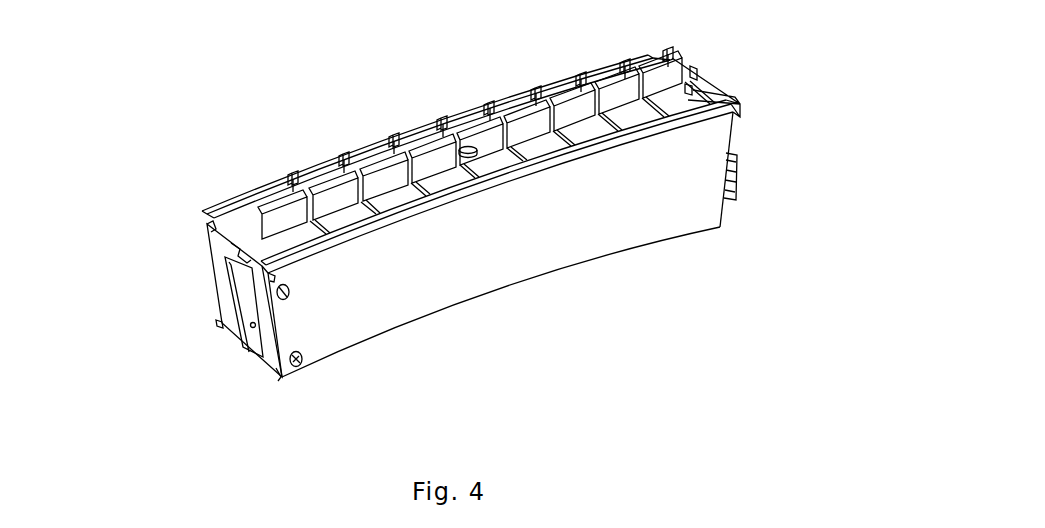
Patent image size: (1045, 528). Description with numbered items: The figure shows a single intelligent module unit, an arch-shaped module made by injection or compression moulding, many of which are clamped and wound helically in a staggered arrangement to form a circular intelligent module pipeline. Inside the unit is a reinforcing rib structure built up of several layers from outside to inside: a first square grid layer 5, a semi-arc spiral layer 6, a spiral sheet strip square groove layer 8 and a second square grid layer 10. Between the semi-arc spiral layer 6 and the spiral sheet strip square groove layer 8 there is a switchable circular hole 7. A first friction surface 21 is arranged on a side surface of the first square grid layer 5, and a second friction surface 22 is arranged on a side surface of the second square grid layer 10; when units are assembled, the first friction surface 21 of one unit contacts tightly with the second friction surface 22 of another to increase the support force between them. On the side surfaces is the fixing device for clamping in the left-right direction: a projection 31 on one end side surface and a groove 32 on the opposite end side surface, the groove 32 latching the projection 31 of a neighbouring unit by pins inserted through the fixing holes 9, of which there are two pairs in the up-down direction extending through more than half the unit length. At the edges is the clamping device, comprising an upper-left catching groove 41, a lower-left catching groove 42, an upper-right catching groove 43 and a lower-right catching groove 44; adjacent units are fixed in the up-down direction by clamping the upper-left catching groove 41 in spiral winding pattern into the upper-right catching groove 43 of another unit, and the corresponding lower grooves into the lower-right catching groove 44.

The first square grid layer 5 is at (675, 63).
The semi-arc spiral layer 6 is at (697, 74).
The switchable circular hole 7 is at (470, 148).
The spiral sheet strip square groove layer 8 is at (692, 90).
The fixing holes 9 is at (302, 363).
The second square grid layer 10 is at (740, 117).
The first friction surface 21 is at (212, 268).
The second friction surface 22 is at (505, 223).
The projection 31 is at (734, 190).
The groove 32 is at (248, 300).
The upper-left catching groove 41 is at (208, 225).
The lower-left catching groove 42 is at (218, 323).
The upper-right catching groove 43 is at (275, 278).
The lower-right catching groove 44 is at (277, 373).